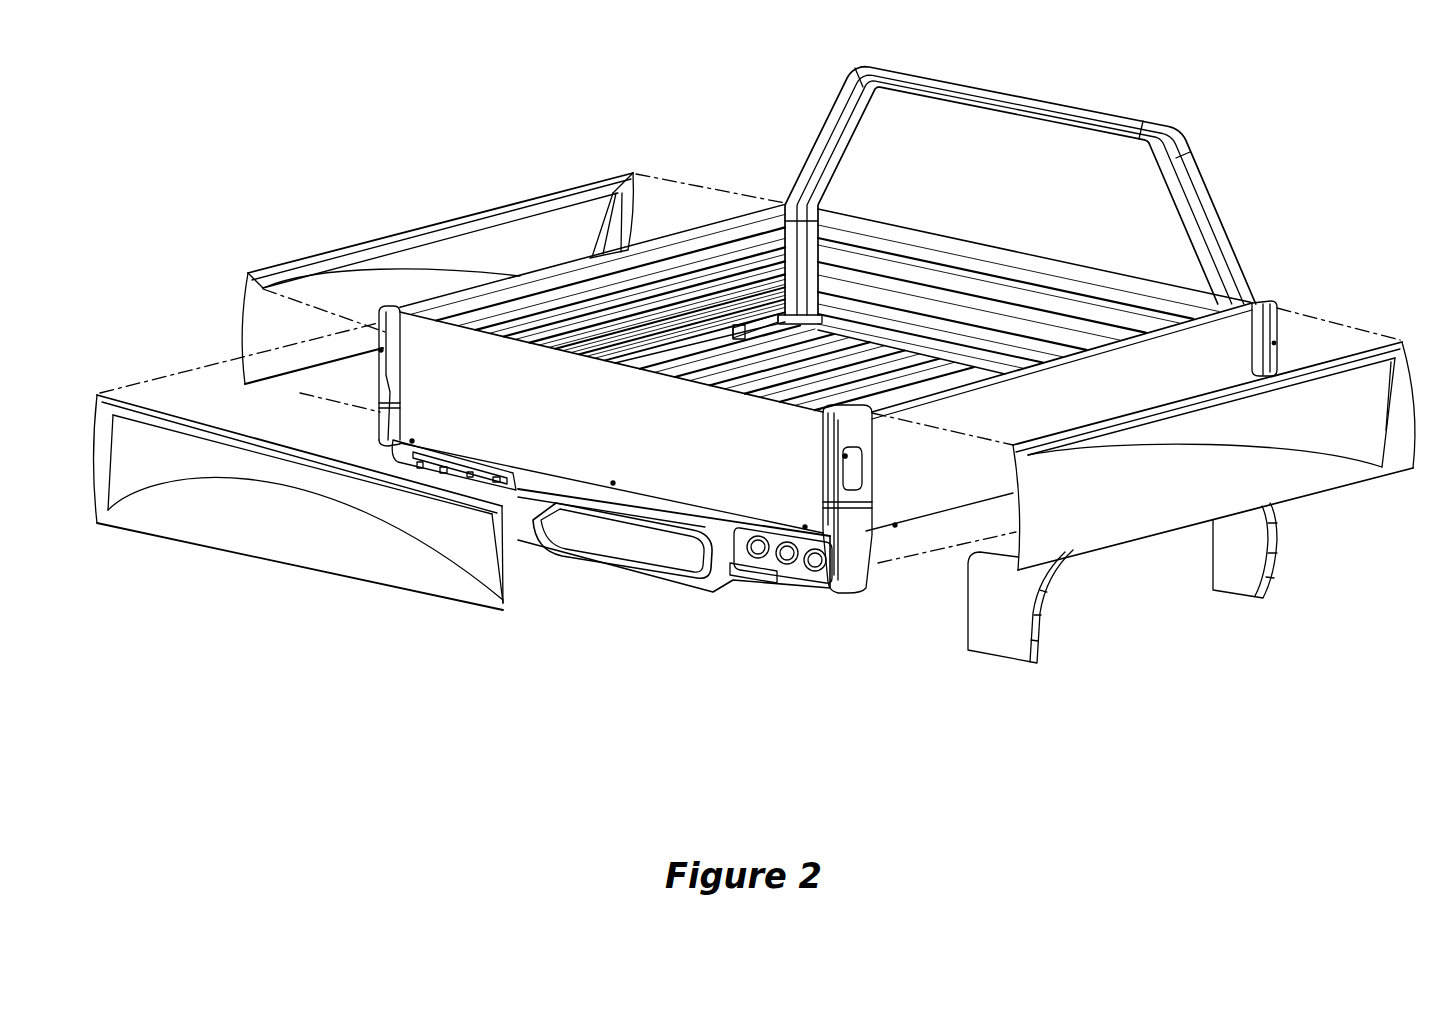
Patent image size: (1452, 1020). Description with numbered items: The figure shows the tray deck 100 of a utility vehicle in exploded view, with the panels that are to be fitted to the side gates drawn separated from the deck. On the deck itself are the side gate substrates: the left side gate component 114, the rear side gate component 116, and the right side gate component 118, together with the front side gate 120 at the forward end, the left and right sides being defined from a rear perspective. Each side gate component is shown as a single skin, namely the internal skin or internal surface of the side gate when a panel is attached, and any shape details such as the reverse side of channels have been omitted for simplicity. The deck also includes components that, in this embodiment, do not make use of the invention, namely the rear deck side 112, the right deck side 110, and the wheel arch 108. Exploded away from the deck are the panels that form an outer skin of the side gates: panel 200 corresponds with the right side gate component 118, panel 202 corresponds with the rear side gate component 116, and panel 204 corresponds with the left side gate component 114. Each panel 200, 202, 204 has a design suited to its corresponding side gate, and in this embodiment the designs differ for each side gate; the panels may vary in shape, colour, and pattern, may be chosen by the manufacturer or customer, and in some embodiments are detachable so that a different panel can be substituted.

The tray deck 100 is at (754, 374).
The wheel arch 108 is at (1002, 652).
The right deck side 110 is at (894, 572).
The rear deck side 112 is at (707, 590).
The left side gate component 114 is at (590, 238).
The rear side gate component 116 is at (646, 431).
The right side gate component 118 is at (1106, 407).
The front side gate 120 is at (1015, 250).
The panel 200 is at (1157, 528).
The panel 202 is at (303, 560).
The panel 204 is at (320, 248).